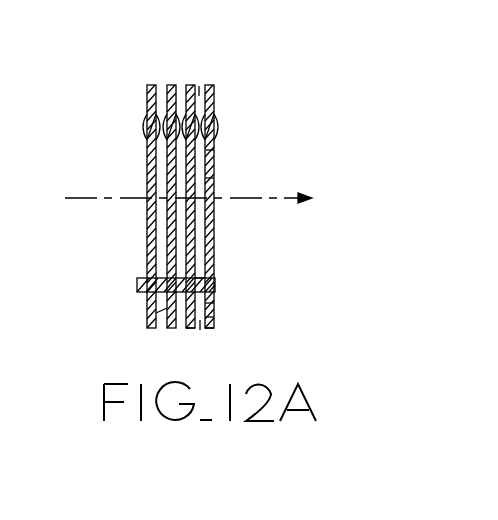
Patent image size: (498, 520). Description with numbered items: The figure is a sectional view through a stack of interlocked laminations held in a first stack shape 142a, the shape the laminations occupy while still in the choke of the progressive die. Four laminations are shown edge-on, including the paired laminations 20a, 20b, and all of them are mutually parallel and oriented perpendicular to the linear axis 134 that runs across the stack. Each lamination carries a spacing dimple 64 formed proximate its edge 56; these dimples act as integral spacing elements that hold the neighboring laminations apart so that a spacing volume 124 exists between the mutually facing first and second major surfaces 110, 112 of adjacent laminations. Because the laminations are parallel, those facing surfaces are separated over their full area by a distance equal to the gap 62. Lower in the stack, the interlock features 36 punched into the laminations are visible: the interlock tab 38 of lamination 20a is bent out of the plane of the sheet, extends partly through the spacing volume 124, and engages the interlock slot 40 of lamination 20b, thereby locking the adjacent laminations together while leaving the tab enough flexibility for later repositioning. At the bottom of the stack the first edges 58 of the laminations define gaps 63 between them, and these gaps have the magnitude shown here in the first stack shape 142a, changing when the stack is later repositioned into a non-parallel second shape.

The first stack shape 142a is at (250, 82).
The edge 56 is at (188, 85).
The gap 62 is at (199, 85).
The spacing dimple 64 is at (212, 128).
The second major surface 112 is at (280, 158).
The first major surface 110 is at (278, 190).
The linear axis 134 is at (285, 197).
The spacing volume 124 is at (152, 160).
The interlock feature 36 is at (131, 287).
The interlock tab 38 is at (198, 285).
The interlock slot 40 is at (166, 305).
The lamination 20a is at (208, 303).
The lamination 20b is at (210, 317).
The first edge 58 is at (194, 328).
The gap 63 is at (200, 330).